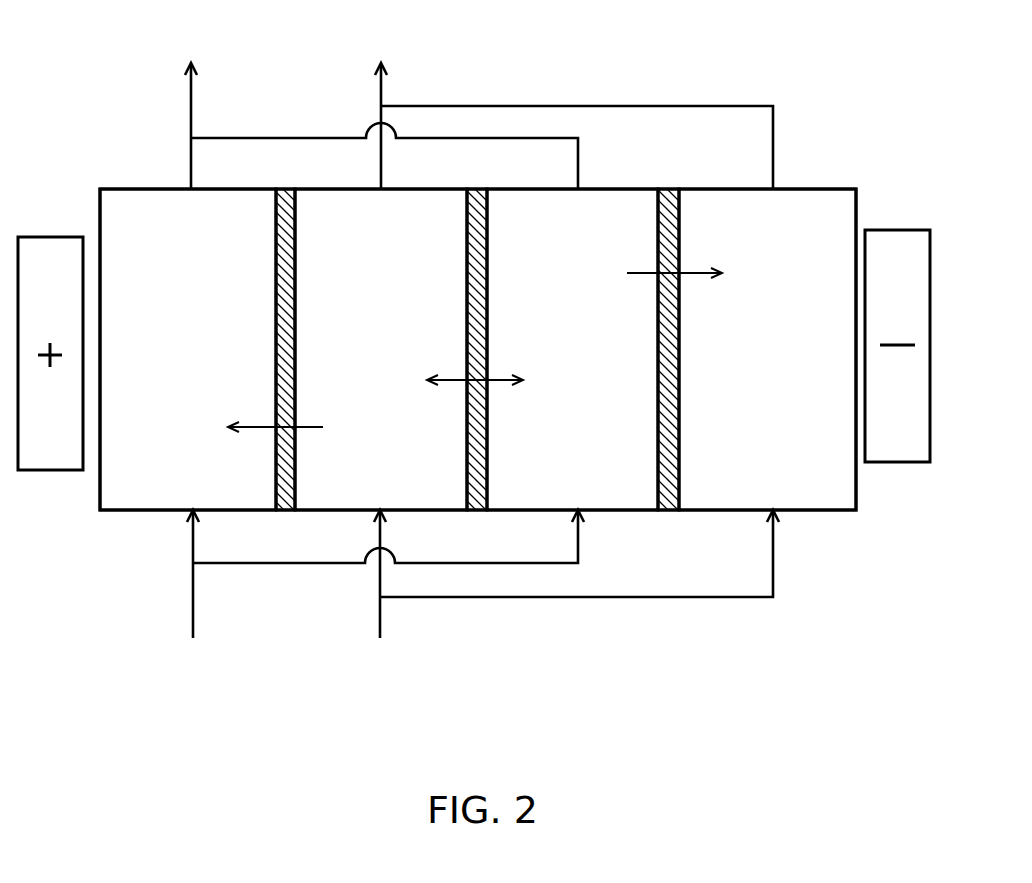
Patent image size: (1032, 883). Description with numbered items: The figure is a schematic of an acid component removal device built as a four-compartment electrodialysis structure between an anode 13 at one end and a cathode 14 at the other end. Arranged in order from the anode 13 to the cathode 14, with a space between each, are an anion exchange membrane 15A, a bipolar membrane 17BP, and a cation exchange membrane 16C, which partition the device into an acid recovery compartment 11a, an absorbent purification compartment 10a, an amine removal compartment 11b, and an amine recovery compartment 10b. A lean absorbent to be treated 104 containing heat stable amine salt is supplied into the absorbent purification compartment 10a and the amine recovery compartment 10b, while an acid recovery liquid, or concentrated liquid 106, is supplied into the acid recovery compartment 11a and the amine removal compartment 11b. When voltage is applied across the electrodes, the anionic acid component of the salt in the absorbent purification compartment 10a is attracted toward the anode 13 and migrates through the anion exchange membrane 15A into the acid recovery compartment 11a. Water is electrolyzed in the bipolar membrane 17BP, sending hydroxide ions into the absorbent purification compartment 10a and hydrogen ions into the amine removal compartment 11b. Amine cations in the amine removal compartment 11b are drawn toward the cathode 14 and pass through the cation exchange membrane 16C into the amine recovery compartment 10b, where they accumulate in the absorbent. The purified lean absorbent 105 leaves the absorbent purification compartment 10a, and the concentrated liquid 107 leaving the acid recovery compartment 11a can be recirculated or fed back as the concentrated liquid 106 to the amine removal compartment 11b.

The acid recovery compartment 11a is at (188, 349).
The absorbent purification compartment 10a is at (395, 349).
The amine removal compartment 11b is at (604, 349).
The amine recovery compartment 10b is at (767, 349).
The anion exchange membrane 15A is at (290, 188).
The bipolar membrane 17BP is at (478, 188).
The cation exchange membrane 16C is at (668, 188).
The anode 13 is at (48, 473).
The cathode 14 is at (900, 465).
The lean absorbent to be treated 104 is at (567, 594).
The lean absorbent 105 is at (564, 110).
The acid recovery liquid (concentrated liquid) 106 is at (377, 594).
The concentrated liquid 107 is at (372, 110).